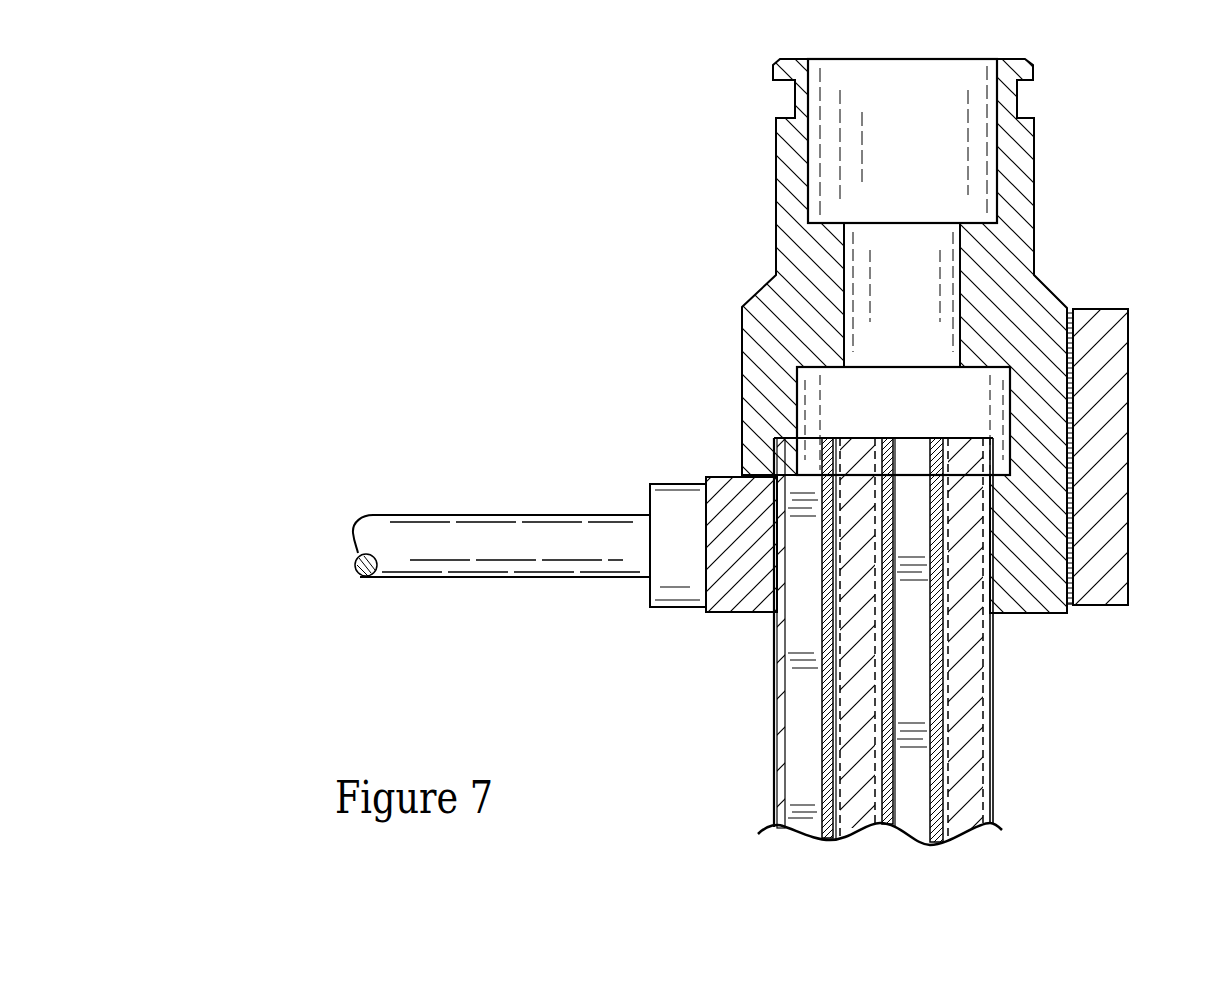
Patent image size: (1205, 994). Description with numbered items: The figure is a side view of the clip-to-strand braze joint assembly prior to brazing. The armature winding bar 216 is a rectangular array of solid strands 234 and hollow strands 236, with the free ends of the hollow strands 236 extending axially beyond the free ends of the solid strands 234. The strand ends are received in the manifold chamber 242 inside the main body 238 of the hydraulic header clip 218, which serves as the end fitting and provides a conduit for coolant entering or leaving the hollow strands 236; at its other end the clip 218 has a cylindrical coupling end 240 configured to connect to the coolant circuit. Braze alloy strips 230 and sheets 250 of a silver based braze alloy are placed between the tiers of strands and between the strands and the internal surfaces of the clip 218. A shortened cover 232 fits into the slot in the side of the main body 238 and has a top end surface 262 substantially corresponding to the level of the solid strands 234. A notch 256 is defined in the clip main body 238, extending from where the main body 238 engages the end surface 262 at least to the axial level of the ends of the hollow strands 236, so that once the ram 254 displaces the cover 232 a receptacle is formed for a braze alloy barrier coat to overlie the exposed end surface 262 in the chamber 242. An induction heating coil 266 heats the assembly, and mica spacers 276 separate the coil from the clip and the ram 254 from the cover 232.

The armature winding bar 216 is at (885, 842).
The hydraulic header clip 218 is at (1052, 292).
The braze alloy strips 230 is at (832, 547).
The cover 232 is at (732, 537).
The solid strands 234 is at (798, 470).
The hollow strands 236 is at (958, 448).
The clip main body 238 is at (1030, 390).
The cylindrical coupling end 240 is at (1023, 145).
The manifold chamber 242 is at (835, 378).
The braze alloy sheets 250 is at (777, 613).
The ram 254 is at (397, 588).
The notch 256 is at (782, 440).
The top end surface 262 is at (727, 477).
The induction heating coil 266 is at (1115, 540).
The mica spacers 276 is at (1070, 604).